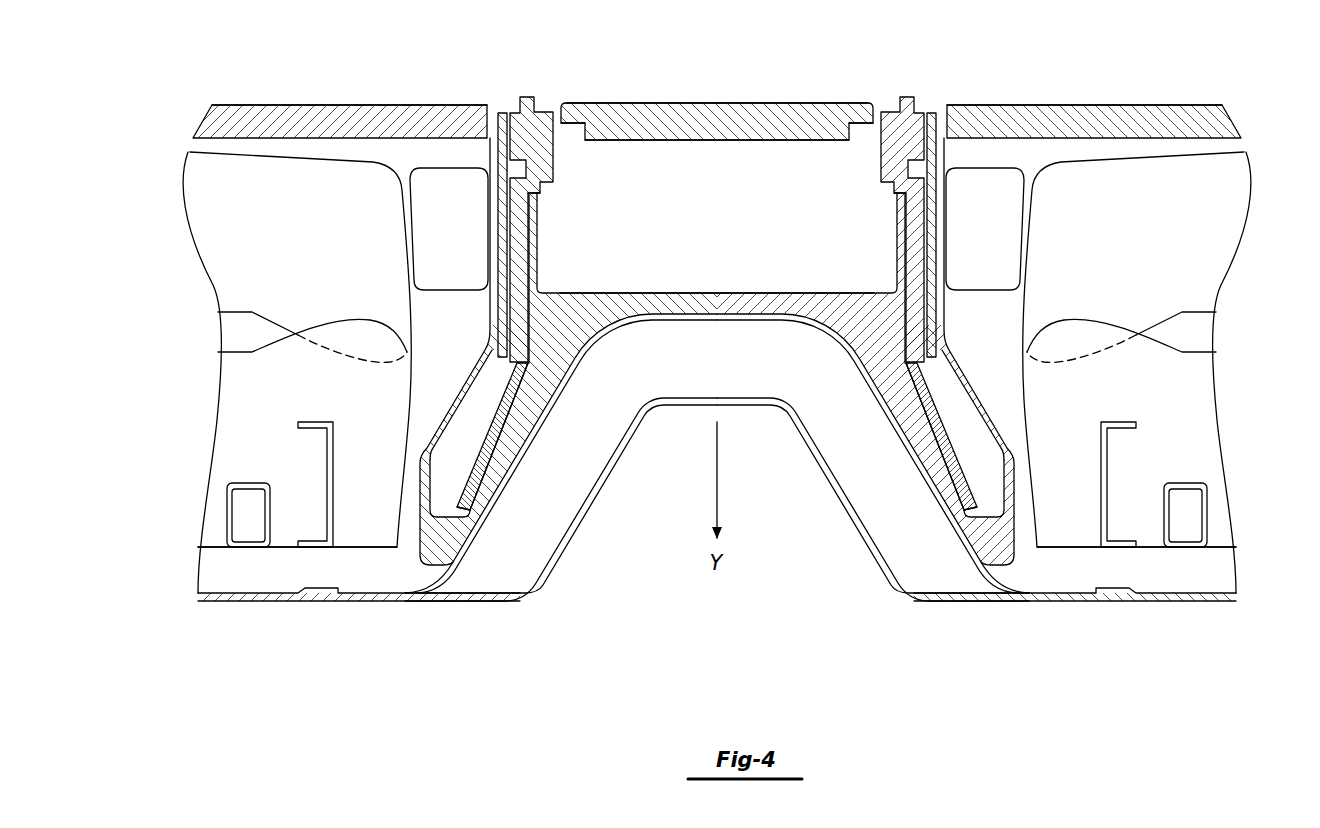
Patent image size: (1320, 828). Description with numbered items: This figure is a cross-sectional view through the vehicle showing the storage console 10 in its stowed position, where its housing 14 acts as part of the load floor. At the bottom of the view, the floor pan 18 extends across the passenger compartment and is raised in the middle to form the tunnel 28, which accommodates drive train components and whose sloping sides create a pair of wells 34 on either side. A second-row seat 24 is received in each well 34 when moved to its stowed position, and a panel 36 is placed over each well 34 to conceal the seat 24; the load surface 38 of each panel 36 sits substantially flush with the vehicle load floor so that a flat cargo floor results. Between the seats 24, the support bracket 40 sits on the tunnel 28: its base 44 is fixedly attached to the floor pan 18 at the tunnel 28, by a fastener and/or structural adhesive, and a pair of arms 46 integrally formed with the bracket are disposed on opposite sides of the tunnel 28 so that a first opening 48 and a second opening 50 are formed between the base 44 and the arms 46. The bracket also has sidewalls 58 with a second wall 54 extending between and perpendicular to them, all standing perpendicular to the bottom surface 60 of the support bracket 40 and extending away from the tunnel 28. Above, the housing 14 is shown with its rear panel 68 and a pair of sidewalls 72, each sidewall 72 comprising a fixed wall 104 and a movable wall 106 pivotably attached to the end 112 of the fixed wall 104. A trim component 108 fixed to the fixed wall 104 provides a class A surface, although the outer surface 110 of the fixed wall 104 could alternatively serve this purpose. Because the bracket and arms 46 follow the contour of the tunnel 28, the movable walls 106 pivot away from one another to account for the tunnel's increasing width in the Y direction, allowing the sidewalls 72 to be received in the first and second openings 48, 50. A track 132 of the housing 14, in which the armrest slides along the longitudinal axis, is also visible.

The storage console 10 is at (644, 96).
The housing 14 is at (798, 96).
The floor pan 18 is at (280, 593).
The second-row seats 24 is at (252, 242).
The tunnel 28 is at (871, 407).
The wells 34 is at (383, 577).
The panel 36 is at (342, 118).
The load surface 38 is at (297, 103).
The support bracket 40 is at (566, 372).
The base 44 is at (882, 348).
The arms 46 is at (462, 404).
The first opening 48 is at (443, 473).
The second opening 50 is at (991, 473).
The second wall 54 is at (720, 200).
The sidewalls 58 is at (535, 258).
The bottom surface 60 is at (687, 292).
The rear panel 68 is at (752, 112).
The sidewalls 72 is at (476, 428).
The fixed wall 104 is at (530, 196).
The movable wall 106 is at (473, 478).
The trim component 108 is at (503, 110).
The outer surface 110 is at (500, 233).
The end 112 is at (522, 367).
The track 132 is at (548, 110).